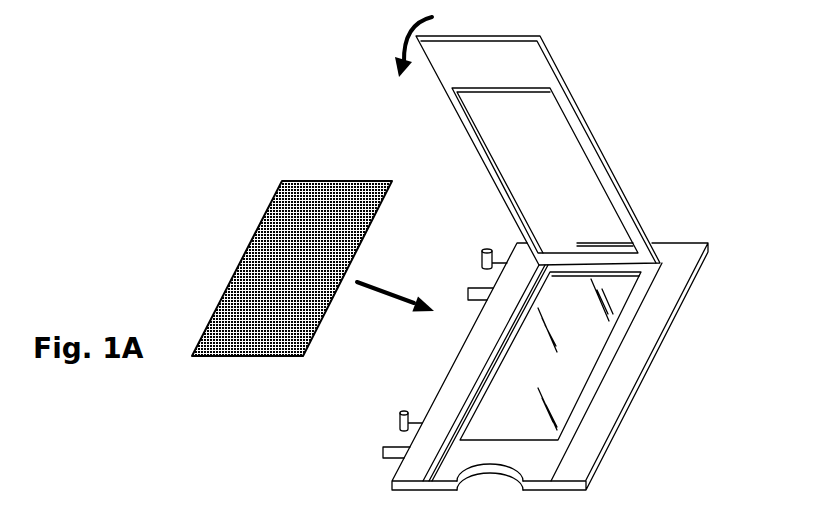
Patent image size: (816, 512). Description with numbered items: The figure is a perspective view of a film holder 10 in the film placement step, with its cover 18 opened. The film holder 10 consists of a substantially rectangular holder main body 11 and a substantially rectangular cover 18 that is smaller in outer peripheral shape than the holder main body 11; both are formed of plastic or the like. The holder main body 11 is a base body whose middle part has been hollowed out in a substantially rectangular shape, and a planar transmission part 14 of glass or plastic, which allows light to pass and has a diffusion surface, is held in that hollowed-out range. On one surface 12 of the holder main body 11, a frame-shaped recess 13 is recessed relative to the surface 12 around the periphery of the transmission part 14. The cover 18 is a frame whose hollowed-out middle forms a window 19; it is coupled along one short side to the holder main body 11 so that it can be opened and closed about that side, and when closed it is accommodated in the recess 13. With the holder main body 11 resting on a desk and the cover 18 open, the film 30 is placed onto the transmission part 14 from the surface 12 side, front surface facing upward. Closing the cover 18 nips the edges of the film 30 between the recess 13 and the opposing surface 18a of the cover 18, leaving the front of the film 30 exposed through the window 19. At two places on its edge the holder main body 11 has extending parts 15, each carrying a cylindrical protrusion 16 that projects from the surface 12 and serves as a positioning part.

The film holder 10 is at (683, 495).
The holder main body 11 is at (634, 408).
The surface 12 is at (458, 381).
The recess 13 is at (468, 410).
The transmission part 14 is at (578, 358).
The extending parts 15 is at (471, 286).
The protrusions 16 is at (482, 253).
The cover 18 is at (597, 137).
The surface of the cover 18a is at (562, 103).
The window 19 is at (579, 182).
The film 30 is at (308, 180).